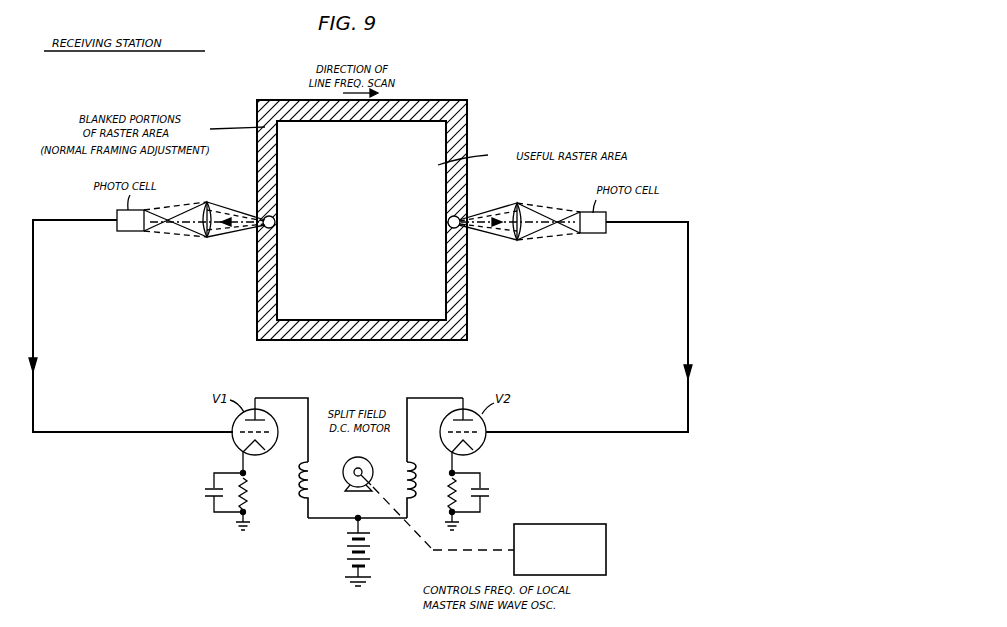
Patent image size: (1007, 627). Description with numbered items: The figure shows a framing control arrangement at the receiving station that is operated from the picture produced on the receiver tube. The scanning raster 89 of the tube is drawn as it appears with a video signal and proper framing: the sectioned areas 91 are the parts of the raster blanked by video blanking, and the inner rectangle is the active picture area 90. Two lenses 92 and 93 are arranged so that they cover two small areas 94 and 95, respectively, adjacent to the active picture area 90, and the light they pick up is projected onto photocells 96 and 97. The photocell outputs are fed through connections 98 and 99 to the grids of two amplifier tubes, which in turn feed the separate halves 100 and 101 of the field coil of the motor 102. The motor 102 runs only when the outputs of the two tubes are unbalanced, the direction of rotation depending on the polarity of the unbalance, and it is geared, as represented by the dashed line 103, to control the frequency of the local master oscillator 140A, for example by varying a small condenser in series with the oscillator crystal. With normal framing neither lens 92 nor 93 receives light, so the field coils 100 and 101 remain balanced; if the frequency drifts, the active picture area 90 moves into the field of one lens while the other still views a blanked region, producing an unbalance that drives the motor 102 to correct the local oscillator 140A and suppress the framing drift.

The scanning raster 89 is at (270, 100).
The active picture area 90 is at (361, 197).
The sectioned areas 91 is at (461, 122).
The lens 92 is at (207, 238).
The lens 93 is at (517, 241).
The small area 94 is at (276, 221).
The small area 95 is at (447, 222).
The photocell 96 is at (126, 232).
The photocell 97 is at (592, 234).
The connection 98 is at (112, 433).
The connection 99 is at (561, 434).
The field coil half 100 is at (300, 496).
The field coil half 101 is at (414, 496).
The motor 102 is at (375, 460).
The dashed line 103 is at (416, 535).
The local master oscillator 140A is at (606, 540).